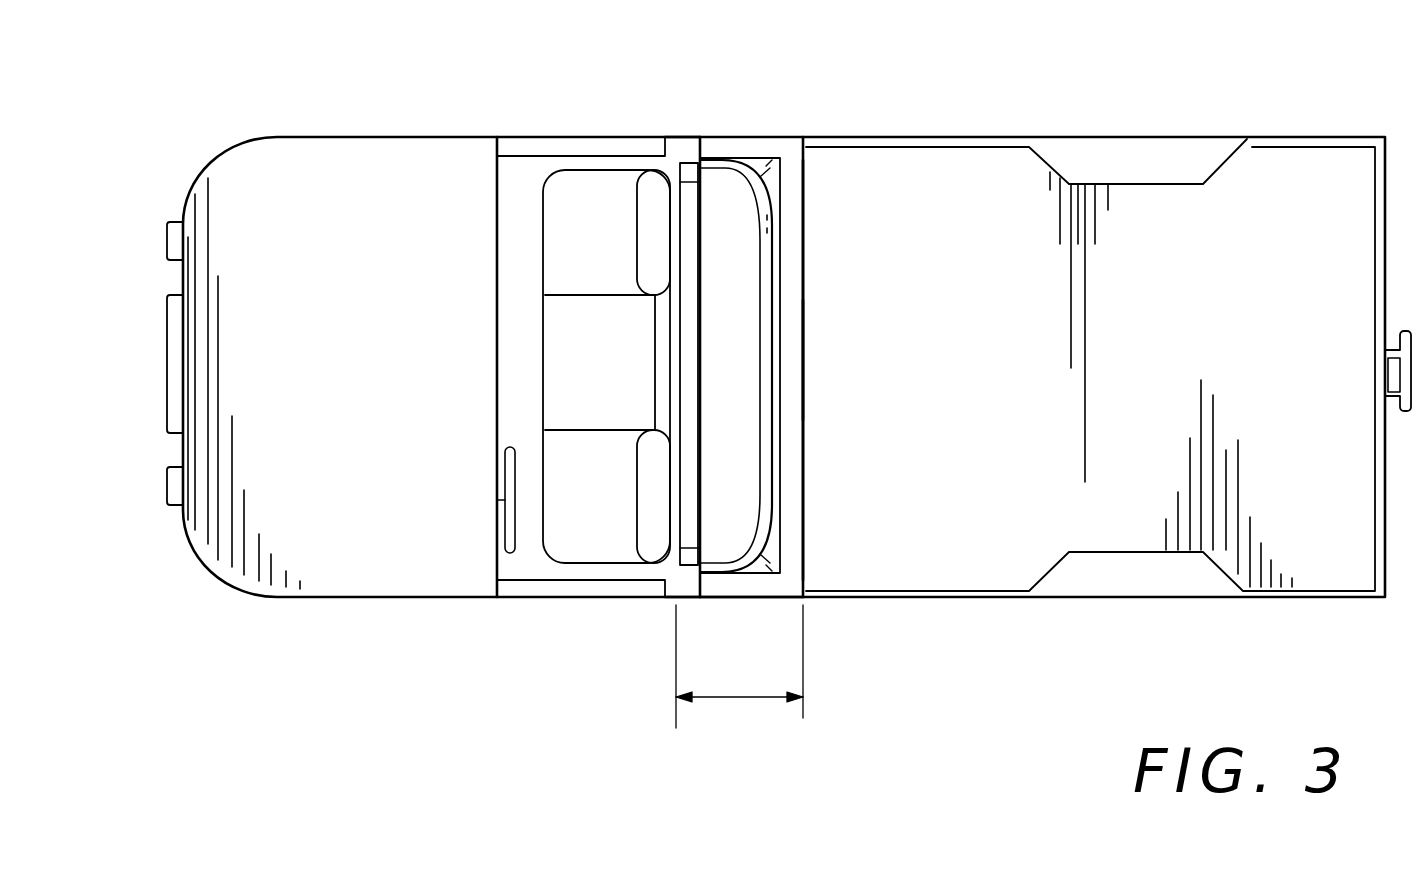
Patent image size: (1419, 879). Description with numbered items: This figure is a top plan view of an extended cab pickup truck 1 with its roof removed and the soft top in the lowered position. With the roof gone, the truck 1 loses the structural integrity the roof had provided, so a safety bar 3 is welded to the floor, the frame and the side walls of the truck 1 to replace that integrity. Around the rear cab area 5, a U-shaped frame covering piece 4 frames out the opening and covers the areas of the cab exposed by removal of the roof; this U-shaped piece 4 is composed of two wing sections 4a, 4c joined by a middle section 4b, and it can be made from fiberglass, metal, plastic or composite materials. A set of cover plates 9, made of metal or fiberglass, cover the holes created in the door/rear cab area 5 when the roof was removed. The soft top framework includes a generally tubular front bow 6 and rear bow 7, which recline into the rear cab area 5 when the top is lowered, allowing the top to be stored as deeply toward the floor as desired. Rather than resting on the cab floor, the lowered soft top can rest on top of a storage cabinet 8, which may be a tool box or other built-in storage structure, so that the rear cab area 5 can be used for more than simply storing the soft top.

The extended cab pickup truck 1 is at (1283, 136).
The safety bar 3 is at (692, 447).
The U-shaped frame covering piece 4 is at (806, 231).
The wing section 4a is at (762, 146).
The middle section 4b is at (806, 360).
The wing section 4c is at (759, 592).
The rear cab area 5 is at (739, 670).
The front bow 6 is at (760, 192).
The rear bow 7 is at (758, 490).
The storage cabinet 8 is at (720, 228).
The cover plates 9 is at (680, 147).